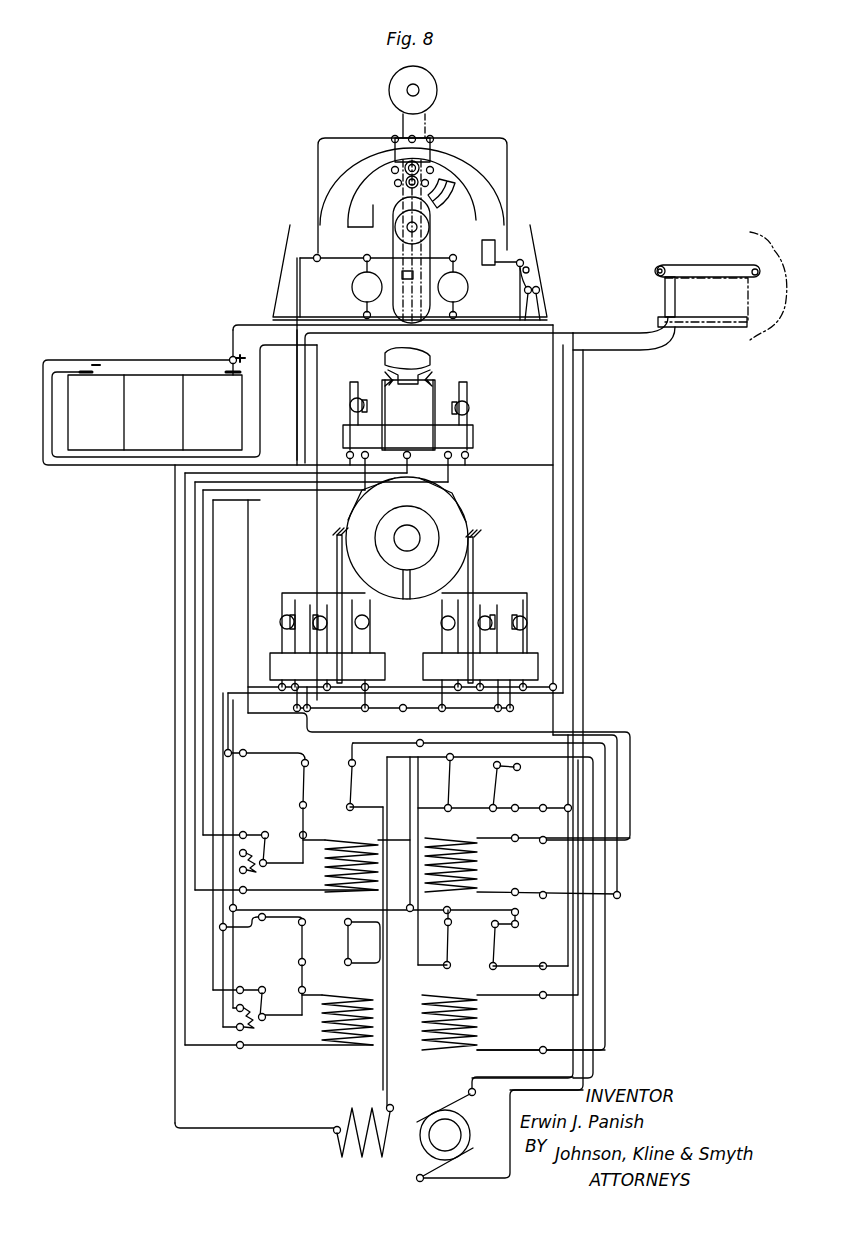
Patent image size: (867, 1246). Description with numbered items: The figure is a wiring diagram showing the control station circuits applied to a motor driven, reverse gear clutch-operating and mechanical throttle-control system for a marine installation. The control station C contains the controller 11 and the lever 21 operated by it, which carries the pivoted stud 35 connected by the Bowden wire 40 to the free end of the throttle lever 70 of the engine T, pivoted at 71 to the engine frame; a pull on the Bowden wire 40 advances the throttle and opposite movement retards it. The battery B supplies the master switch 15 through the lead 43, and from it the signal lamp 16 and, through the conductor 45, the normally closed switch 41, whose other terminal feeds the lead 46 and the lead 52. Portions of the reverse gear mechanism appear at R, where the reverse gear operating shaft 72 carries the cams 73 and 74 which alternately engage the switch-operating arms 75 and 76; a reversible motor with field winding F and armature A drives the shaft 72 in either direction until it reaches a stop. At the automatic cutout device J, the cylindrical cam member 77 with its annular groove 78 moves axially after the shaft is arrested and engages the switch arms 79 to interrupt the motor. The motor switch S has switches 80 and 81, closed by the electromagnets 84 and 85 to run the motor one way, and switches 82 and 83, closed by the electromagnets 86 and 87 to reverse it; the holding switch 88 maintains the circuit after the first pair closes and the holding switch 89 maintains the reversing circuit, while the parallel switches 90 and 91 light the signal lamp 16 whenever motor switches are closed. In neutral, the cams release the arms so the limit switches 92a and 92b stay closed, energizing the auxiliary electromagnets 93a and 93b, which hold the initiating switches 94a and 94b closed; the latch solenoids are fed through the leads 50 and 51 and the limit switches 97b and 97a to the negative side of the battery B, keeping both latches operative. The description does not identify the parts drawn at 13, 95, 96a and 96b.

The controller 11 is at (400, 130).
The pulley 13 is at (437, 90).
The master switch 15 is at (530, 265).
The signal lamp 16 is at (540, 298).
The lever 21 is at (405, 250).
The pivoted stud 35 is at (414, 275).
The Bowden wire 40 is at (626, 349).
The switch 41 is at (497, 252).
The lead 43 is at (522, 300).
The conductor 45 is at (500, 262).
The lead 46 is at (507, 180).
The lead 50 is at (364, 304).
The lead 51 is at (458, 308).
The lead 52 is at (296, 405).
The throttle lever 70 is at (708, 268).
The pivot 71 is at (762, 280).
The reverse gear operating shaft 72 is at (406, 530).
The cam 73 is at (458, 512).
The cam 74 is at (350, 507).
The switch-operating arm 75 is at (474, 552).
The switch-operating arm 76 is at (336, 550).
The cylindrical cam member 77 is at (385, 358).
The annular groove 78 is at (425, 372).
The switch arms 79 is at (430, 403).
The switch 80 is at (356, 765).
The switch 81 is at (453, 764).
The switch 82 is at (352, 925).
The switch 83 is at (452, 926).
The electromagnet 84 is at (352, 845).
The electromagnet 85 is at (446, 848).
The electromagnet 86 is at (363, 998).
The electromagnet 87 is at (470, 1000).
The holding switch 88 is at (309, 764).
The holding switch 89 is at (306, 924).
The switch 90 is at (503, 770).
The switch 91 is at (499, 928).
The limit switch 92a is at (358, 620).
The limit switch 92b is at (448, 620).
The auxiliary electromagnet 93a is at (253, 868).
The auxiliary electromagnet 93b is at (256, 1022).
The initiating switch 94a is at (265, 834).
The initiating switch 94b is at (263, 988).
The contact 95 is at (350, 406).
The contact 96a is at (320, 615).
The contact 96b is at (488, 615).
The limit switch 97a is at (290, 612).
The limit switch 97b is at (518, 612).
The armature A is at (418, 1154).
The battery B is at (132, 437).
The control station C is at (305, 205).
The field winding F is at (333, 1155).
The automatic cutout device J is at (481, 393).
The reverse gear clutch operating mechanism R is at (498, 531).
The motor switch S is at (642, 908).
The engine T is at (773, 341).